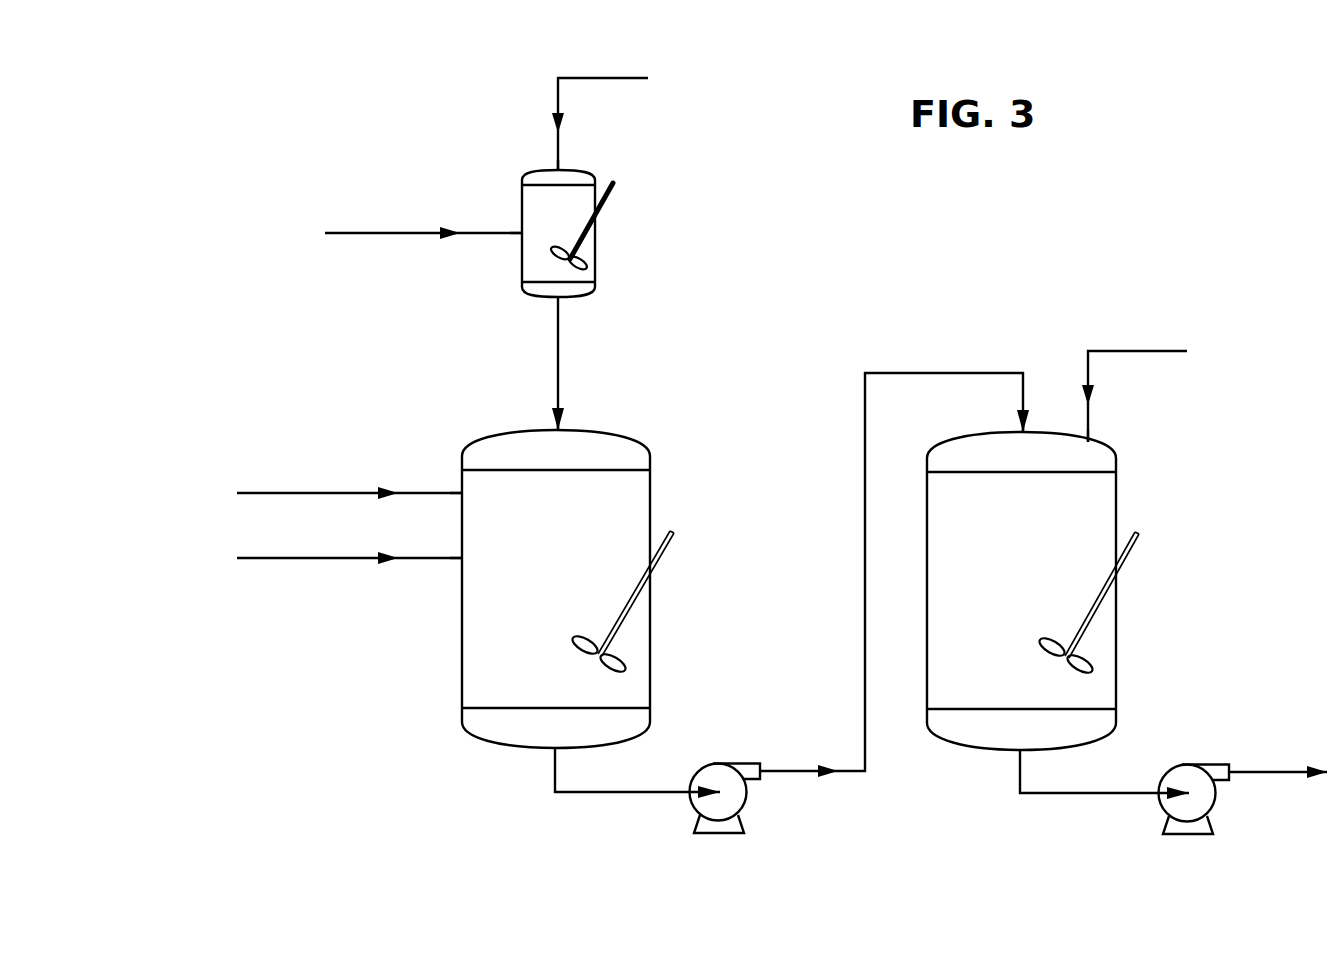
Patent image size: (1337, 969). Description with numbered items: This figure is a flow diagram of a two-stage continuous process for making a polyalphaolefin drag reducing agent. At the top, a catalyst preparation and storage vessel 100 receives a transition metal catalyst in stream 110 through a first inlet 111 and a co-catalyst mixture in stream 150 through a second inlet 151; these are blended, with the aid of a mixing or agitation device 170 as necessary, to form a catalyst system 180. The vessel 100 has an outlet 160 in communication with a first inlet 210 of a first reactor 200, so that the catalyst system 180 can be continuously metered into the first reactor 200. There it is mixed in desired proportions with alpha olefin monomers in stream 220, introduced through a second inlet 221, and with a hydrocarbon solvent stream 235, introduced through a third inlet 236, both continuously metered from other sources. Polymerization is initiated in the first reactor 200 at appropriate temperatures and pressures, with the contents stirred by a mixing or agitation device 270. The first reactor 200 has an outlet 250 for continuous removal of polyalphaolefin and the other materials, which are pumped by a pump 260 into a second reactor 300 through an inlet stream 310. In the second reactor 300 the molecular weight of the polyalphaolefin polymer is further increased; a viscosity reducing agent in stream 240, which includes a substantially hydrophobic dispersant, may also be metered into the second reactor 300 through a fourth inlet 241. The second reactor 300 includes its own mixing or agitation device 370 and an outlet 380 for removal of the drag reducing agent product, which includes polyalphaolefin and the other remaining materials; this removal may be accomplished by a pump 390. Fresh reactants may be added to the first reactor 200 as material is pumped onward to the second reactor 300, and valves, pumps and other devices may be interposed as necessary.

The catalyst preparation and storage vessel 100 is at (522, 195).
The transition metal catalyst stream 110 is at (600, 109).
The first inlet 111 is at (581, 156).
The co-catalyst mixture stream 150 is at (423, 222).
The second inlet 151 is at (500, 219).
The outlet 160 is at (581, 363).
The mixing or agitation device 170 is at (609, 197).
The catalyst system 180 is at (568, 243).
The first reactor 200 is at (650, 497).
The first inlet 210 is at (584, 415).
The alpha olefin monomer stream 220 is at (349, 482).
The second inlet 221 is at (435, 480).
The hydrocarbon solvent stream 235 is at (349, 547).
The third inlet 236 is at (435, 545).
The outlet stream 250 is at (637, 773).
The pump 260 is at (745, 803).
The mixing or agitation device 270 is at (668, 545).
The second reactor 300 is at (1117, 496).
The inlet stream 310 is at (996, 416).
The viscosity reducing agent stream 240 is at (1134, 381).
The fourth inlet 241 is at (1114, 427).
The mixing or agitation device 370 is at (1135, 545).
The outlet 380 is at (1104, 774).
The pump 390 is at (1213, 803).